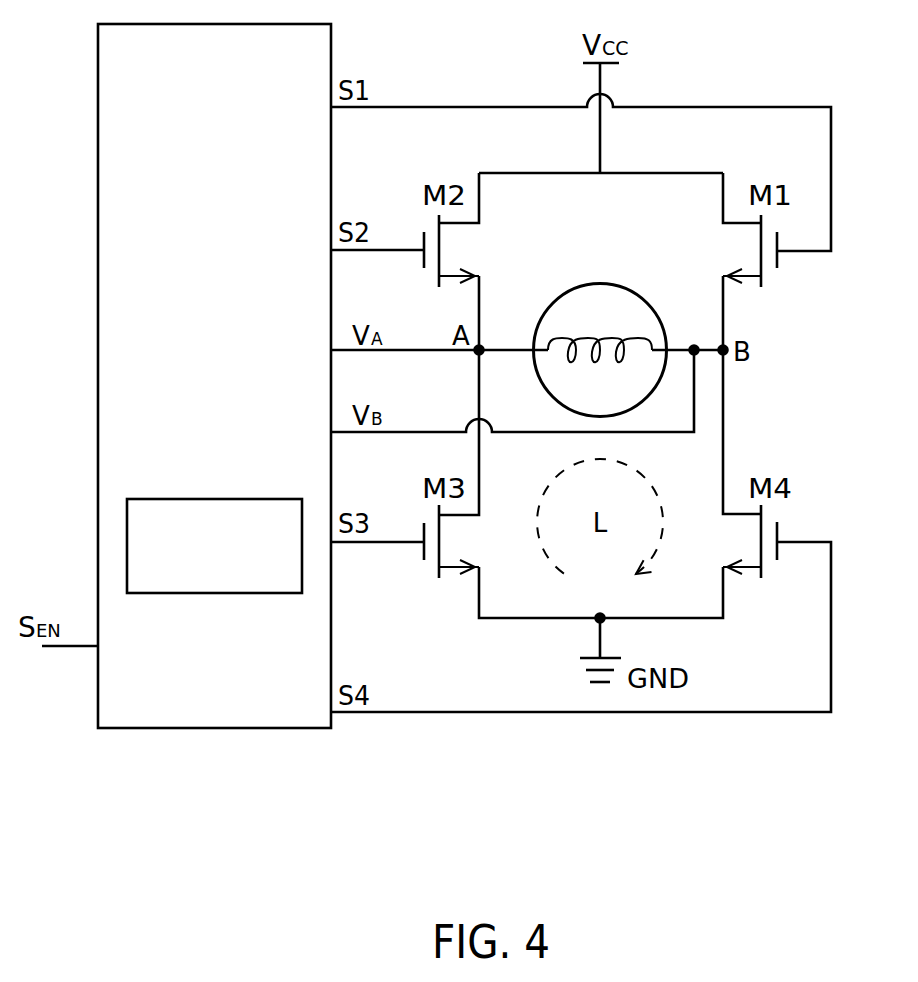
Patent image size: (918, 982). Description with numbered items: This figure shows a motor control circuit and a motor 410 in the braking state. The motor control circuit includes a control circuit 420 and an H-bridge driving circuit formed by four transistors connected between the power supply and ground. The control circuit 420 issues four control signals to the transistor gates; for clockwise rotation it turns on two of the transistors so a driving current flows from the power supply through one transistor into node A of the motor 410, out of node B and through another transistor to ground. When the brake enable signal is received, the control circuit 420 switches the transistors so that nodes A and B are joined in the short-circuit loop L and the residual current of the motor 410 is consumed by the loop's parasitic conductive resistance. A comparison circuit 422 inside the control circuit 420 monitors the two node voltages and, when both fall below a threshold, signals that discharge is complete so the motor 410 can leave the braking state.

The motor 410 is at (600, 283).
The control circuit 420 is at (214, 730).
The comparison circuit 422 is at (214, 596).